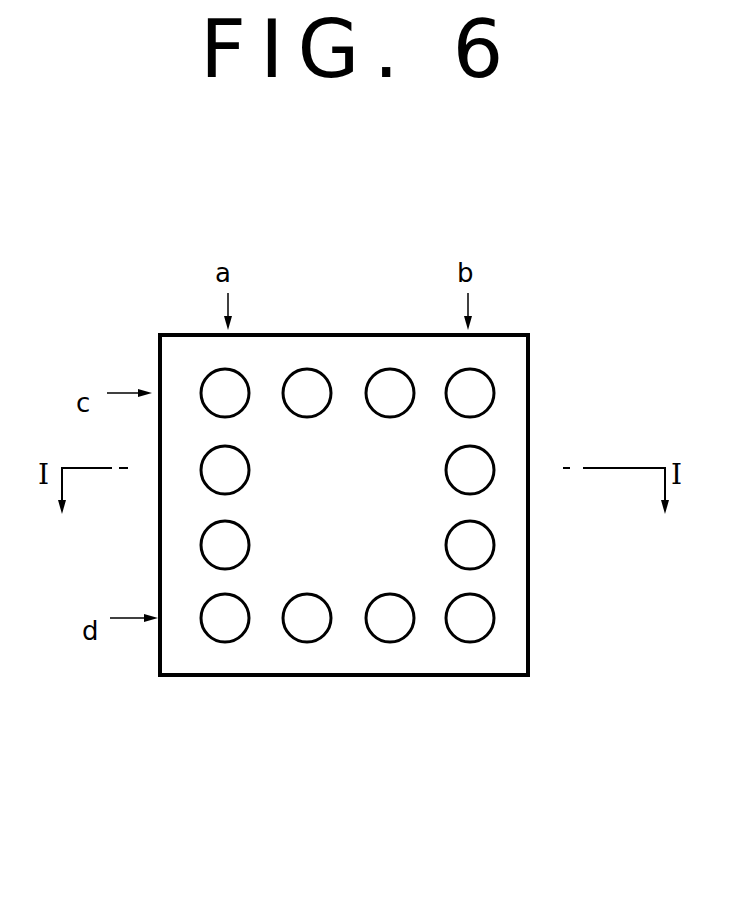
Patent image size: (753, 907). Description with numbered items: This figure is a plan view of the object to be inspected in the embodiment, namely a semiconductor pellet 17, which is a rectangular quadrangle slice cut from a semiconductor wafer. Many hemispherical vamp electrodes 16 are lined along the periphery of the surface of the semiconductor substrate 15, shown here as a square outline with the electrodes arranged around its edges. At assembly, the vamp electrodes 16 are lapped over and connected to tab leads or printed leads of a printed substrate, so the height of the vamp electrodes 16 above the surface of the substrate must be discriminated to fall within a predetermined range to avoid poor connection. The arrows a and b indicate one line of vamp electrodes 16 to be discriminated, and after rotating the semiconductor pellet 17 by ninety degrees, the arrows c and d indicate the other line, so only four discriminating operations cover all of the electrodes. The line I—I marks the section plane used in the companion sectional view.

The semiconductor substrate 15 is at (523, 647).
The vamp electrodes 16 is at (495, 542).
The semiconductor pellet 17 is at (546, 351).